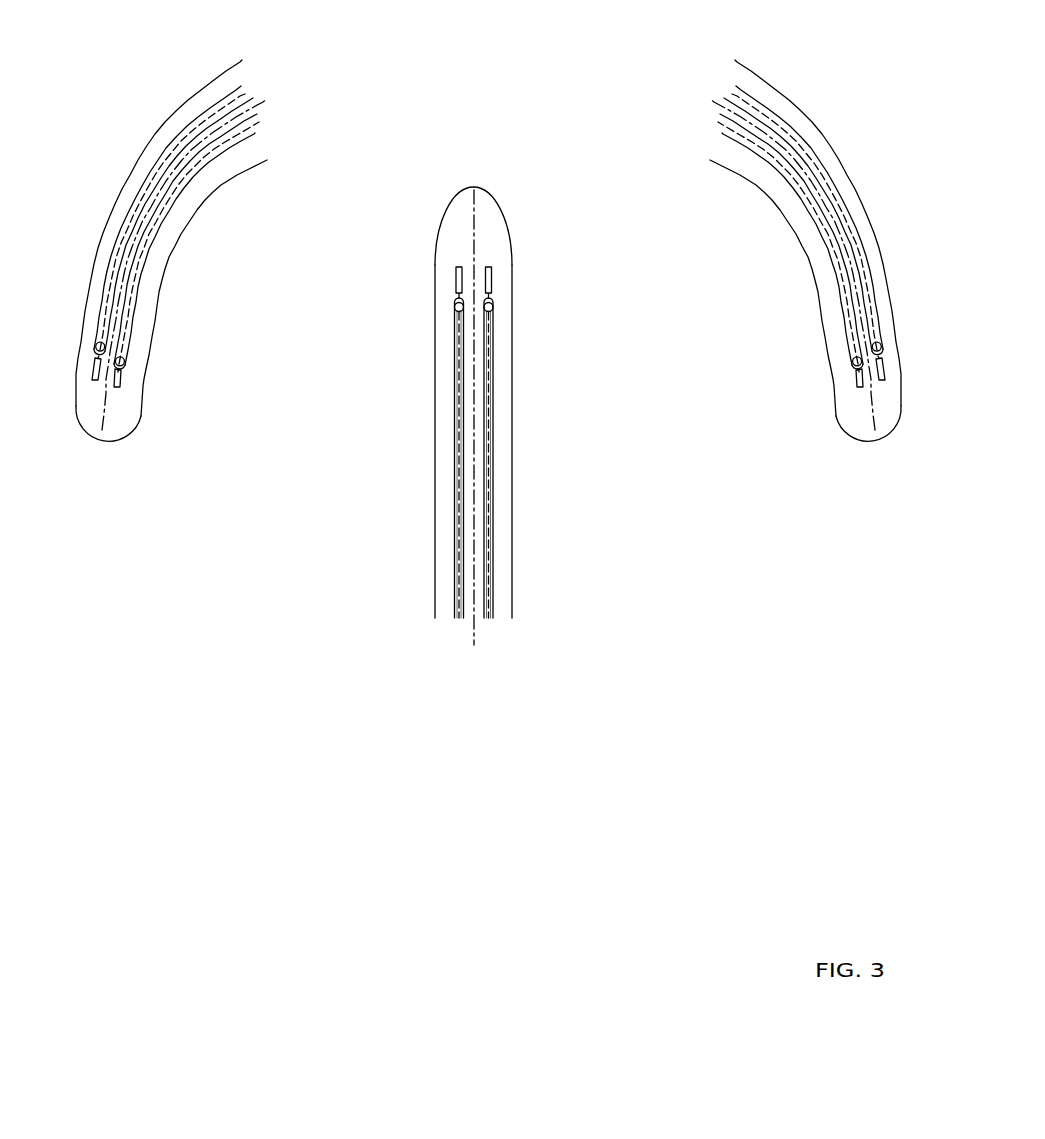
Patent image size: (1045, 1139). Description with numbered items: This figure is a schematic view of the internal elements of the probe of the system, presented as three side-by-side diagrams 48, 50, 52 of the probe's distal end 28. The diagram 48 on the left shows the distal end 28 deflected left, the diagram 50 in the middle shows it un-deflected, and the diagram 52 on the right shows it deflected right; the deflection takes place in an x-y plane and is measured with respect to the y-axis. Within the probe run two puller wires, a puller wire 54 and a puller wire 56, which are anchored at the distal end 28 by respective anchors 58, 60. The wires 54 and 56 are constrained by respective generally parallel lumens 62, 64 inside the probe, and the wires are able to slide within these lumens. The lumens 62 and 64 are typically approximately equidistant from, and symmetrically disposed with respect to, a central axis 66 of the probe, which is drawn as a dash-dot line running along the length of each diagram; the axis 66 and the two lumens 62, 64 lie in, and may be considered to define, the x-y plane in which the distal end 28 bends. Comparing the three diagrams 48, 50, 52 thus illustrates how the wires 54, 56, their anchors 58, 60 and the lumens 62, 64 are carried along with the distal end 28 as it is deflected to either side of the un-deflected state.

The distal end 28 is at (145, 382).
The diagram 48 is at (155, 510).
The diagram 50 is at (511, 697).
The diagram 52 is at (875, 510).
The puller wire 54 is at (137, 293).
The puller wire 56 is at (117, 278).
The anchor 58 is at (120, 390).
The anchor 60 is at (90, 372).
The lumen 62 is at (167, 228).
The lumen 64 is at (137, 200).
The central axis 66 is at (103, 432).